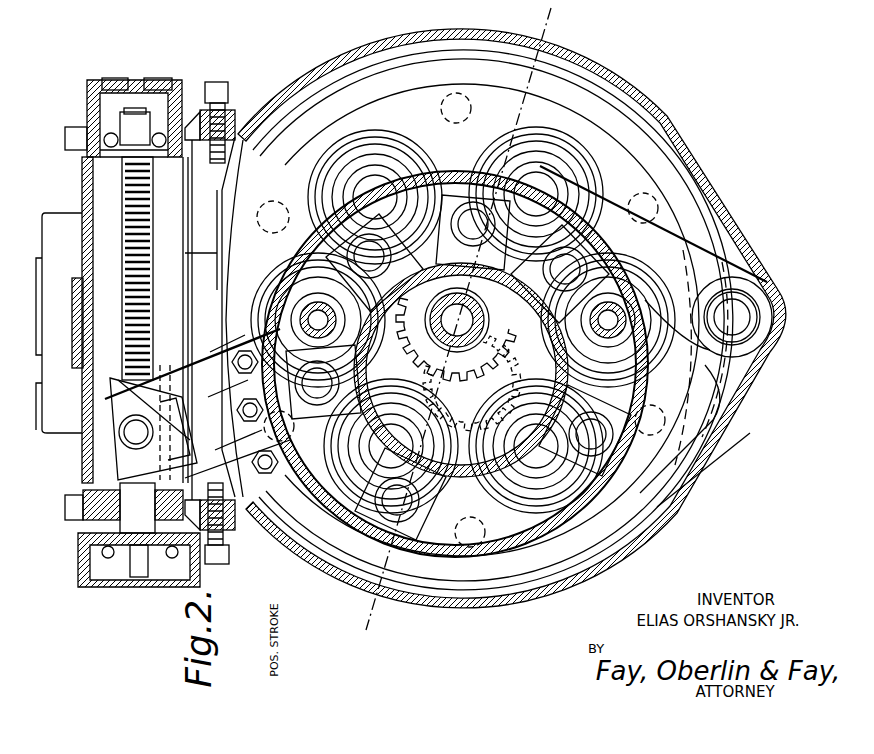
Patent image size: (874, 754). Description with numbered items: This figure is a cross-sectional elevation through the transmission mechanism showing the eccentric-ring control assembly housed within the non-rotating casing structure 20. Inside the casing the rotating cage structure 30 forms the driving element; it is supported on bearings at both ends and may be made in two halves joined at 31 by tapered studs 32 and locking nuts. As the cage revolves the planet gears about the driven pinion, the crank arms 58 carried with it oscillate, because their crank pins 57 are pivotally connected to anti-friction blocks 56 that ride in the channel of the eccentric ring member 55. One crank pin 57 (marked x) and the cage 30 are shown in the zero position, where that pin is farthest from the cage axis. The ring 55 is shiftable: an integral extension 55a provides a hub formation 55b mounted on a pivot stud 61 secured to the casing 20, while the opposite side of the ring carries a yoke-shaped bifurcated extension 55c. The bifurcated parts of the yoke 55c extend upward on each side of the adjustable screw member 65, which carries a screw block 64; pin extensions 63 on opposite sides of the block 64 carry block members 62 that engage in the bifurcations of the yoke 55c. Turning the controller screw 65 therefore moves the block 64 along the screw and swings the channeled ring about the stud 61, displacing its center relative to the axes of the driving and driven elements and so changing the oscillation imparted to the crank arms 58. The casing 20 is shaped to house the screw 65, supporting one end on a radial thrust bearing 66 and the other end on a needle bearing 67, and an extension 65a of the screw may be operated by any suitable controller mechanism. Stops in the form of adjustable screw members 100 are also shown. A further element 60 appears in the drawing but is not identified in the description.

The housing or casing structure 20 is at (680, 515).
The rotating cage structure 30 is at (430, 318).
The joint of cage halves 31 is at (530, 130).
The tapered studs 32 is at (456, 108).
The eccentric ring member 55 is at (300, 150).
The integral extension 55a is at (670, 387).
The hub formation 55b is at (757, 293).
The yoke-shaped bifurcated extension 55c is at (200, 360).
The anti-friction blocks 56 is at (352, 246).
The crank pins 57 is at (392, 476).
The crank arms 58 is at (219, 9).
The gear 60 is at (492, 335).
The pivot stud 61 is at (740, 322).
The block members 62 is at (118, 415).
The pin extensions 63 is at (110, 392).
The screw block 64 is at (136, 425).
The adjustable screw member 65 is at (125, 205).
The extension of adjusting screw 65a is at (130, 577).
The radial thrust bearing 66 is at (92, 118).
The needle bearing 67 is at (120, 505).
The adjustable screw members 100 is at (213, 82).